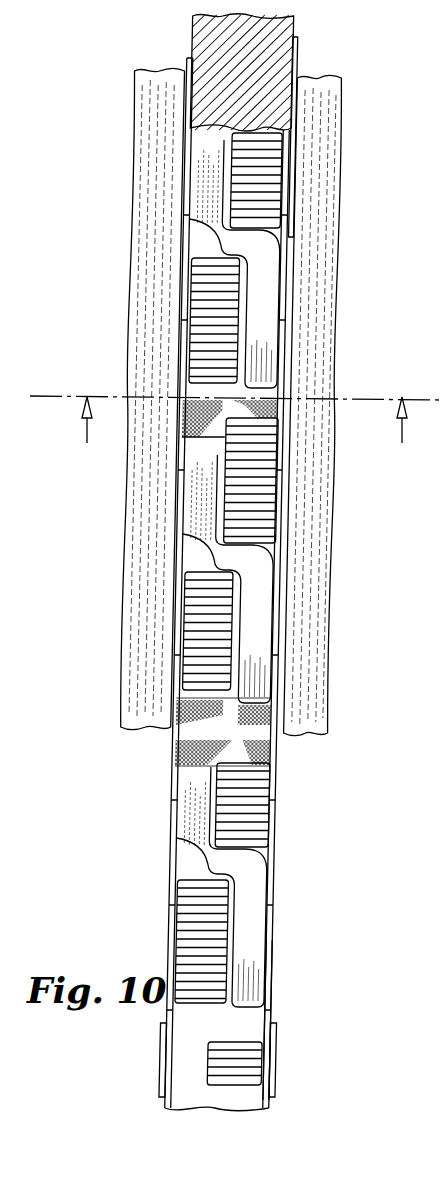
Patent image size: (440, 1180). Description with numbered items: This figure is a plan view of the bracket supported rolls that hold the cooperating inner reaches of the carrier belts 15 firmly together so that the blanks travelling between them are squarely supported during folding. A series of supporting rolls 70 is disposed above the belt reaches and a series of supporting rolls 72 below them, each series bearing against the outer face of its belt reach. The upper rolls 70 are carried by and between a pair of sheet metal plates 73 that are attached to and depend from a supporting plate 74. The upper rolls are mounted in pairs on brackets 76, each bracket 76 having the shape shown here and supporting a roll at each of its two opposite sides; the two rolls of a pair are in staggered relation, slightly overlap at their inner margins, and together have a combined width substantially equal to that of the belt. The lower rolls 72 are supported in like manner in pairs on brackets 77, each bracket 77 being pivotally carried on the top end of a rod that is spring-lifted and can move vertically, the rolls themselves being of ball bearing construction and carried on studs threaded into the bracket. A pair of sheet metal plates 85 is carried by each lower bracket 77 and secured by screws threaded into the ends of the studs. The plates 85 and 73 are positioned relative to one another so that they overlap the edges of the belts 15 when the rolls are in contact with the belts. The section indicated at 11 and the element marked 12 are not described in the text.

The supporting plate 74 is at (198, 33).
The sheet metal plates 73 is at (296, 50).
The supporting rolls 70 is at (270, 168).
The bracket 76 is at (263, 258).
The housing wall 12 is at (312, 680).
The carrier belts 15 is at (198, 706).
The supporting rolls 72 is at (262, 832).
The bracket 77 is at (248, 873).
The sheet metal plates 85 is at (277, 973).
The section line 11- 11 is at (235, 435).